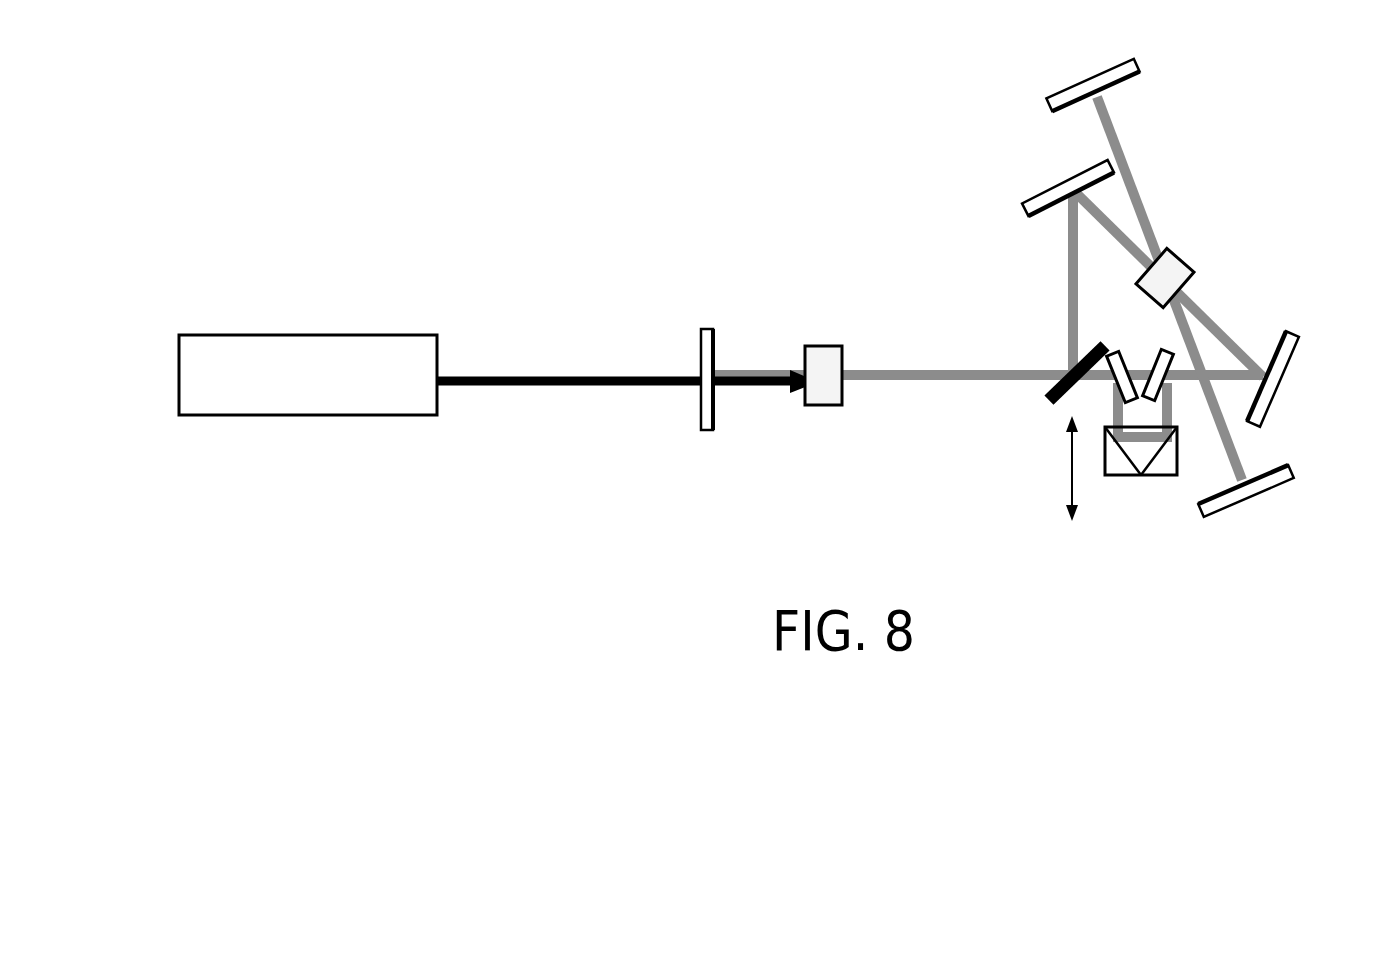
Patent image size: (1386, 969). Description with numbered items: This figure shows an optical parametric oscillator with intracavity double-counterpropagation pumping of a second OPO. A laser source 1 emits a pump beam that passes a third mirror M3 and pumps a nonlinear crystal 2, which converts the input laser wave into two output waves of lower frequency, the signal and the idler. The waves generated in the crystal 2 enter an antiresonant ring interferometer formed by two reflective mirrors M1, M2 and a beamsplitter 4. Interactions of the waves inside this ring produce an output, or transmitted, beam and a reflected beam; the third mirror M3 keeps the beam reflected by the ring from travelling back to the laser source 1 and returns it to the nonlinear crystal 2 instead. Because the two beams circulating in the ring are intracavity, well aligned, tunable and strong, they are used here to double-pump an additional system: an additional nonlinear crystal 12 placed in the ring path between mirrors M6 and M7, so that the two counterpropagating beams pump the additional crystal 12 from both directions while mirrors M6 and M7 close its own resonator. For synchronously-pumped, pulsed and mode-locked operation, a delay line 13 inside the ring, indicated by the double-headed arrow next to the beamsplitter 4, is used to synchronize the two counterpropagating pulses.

The laser source 1 is at (298, 335).
The nonlinear crystal 2 is at (823, 346).
The beamsplitter 4 is at (1067, 370).
The additional nonlinear crystal 12 is at (1182, 255).
The delay line 13 is at (1068, 468).
The reflective mirror M1 is at (1050, 192).
The reflective mirror M2 is at (1278, 387).
The third mirror M3 is at (698, 440).
The mirror M6 is at (1072, 88).
The mirror M7 is at (1243, 502).